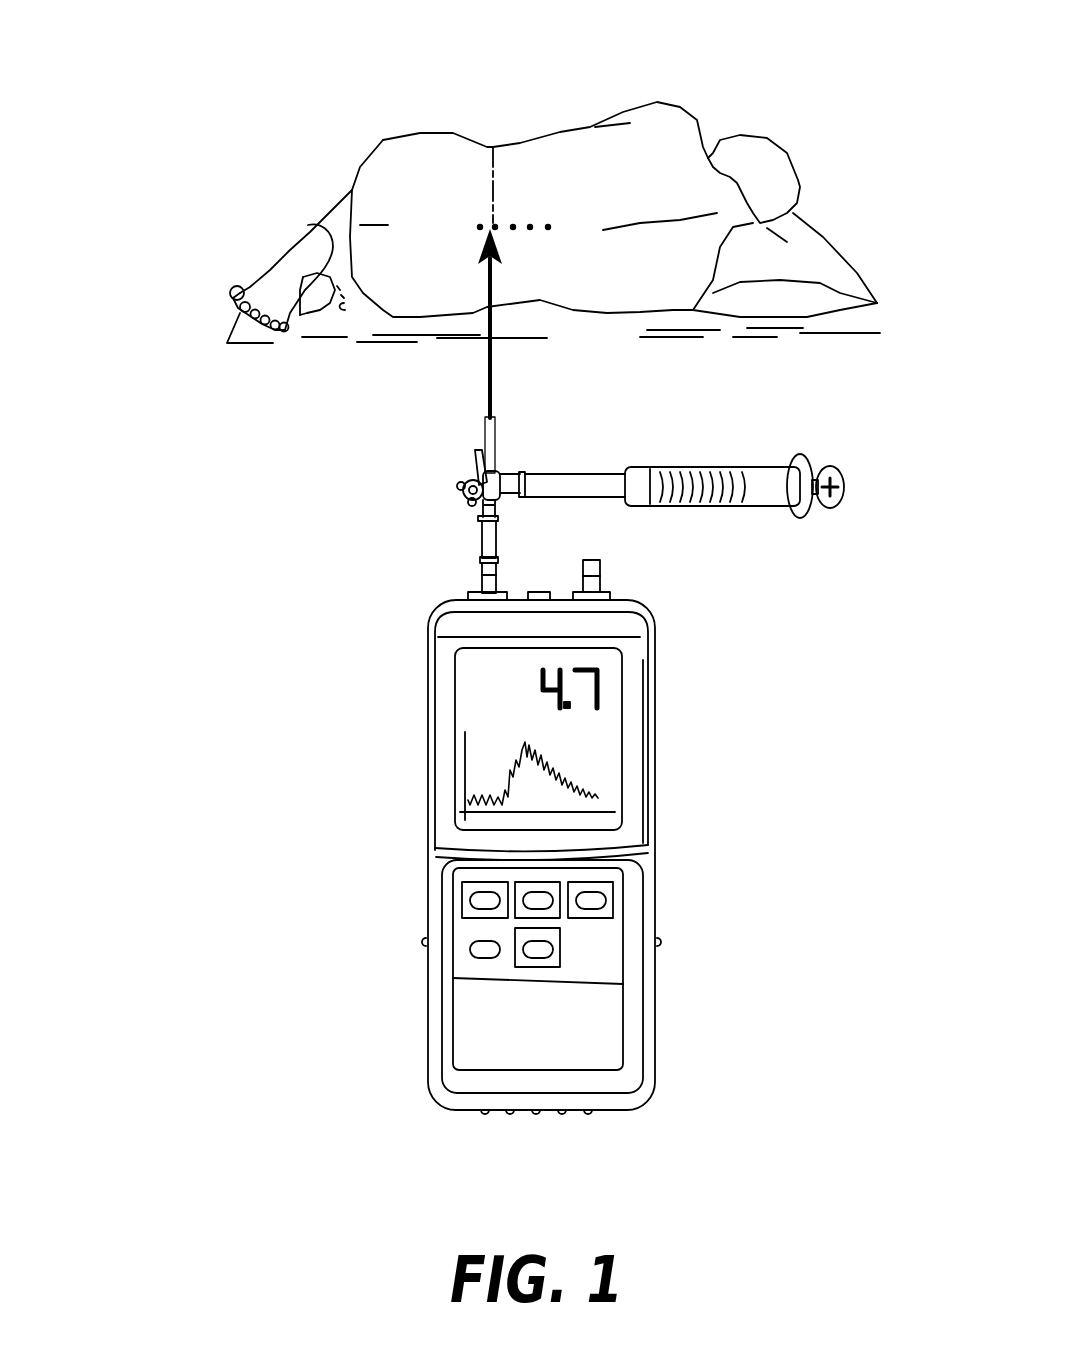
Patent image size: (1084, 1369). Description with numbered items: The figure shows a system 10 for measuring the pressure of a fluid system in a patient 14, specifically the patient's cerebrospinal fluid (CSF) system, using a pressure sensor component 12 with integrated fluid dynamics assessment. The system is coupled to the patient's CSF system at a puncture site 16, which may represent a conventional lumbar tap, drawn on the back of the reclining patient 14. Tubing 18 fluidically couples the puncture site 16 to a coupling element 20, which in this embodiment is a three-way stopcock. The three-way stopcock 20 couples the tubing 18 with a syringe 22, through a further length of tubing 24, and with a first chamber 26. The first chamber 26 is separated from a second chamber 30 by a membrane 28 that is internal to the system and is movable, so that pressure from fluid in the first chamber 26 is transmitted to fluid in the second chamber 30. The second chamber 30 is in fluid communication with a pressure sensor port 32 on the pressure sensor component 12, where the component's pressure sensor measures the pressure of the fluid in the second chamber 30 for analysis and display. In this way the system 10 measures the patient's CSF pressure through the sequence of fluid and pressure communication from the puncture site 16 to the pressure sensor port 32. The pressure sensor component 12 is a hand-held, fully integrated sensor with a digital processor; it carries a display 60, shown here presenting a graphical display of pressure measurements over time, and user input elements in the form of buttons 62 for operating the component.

The system 10 is at (245, 661).
The pressure sensor component 12 is at (428, 738).
The patient 14 is at (687, 107).
The puncture site 16 is at (494, 226).
The tubing 18 is at (487, 365).
The coupling element 20 is at (463, 490).
The syringe 22 is at (722, 467).
The tubing 24 is at (570, 475).
The first chamber 26 is at (477, 509).
The membrane 28 is at (500, 515).
The second chamber 30 is at (477, 538).
The pressure sensor port 32 is at (477, 568).
The display 60 is at (605, 732).
The buttons 62 is at (462, 900).